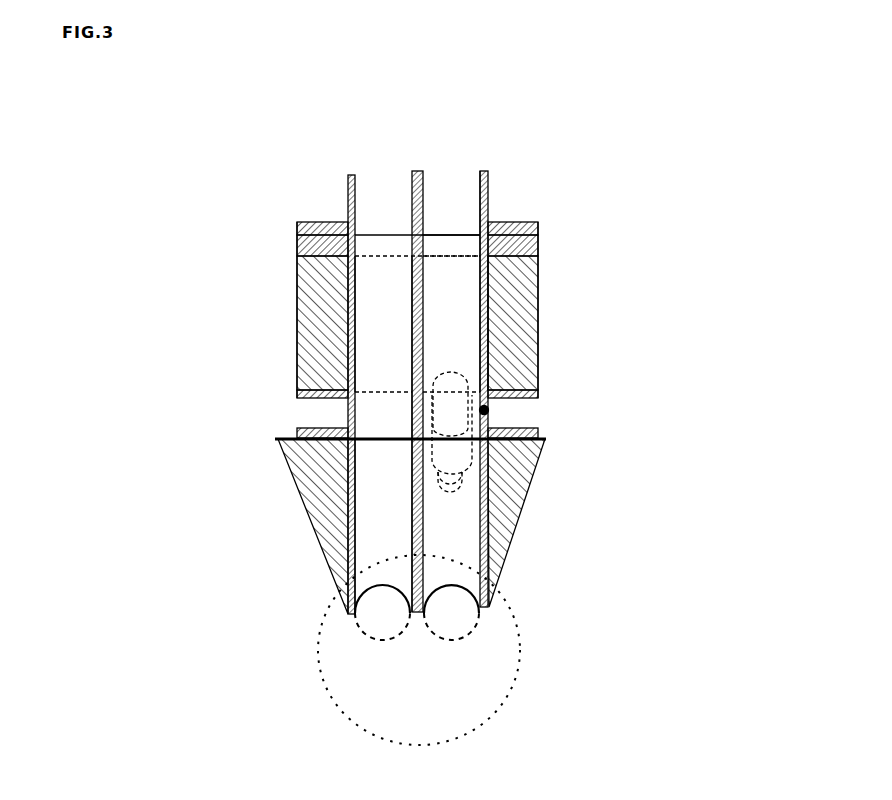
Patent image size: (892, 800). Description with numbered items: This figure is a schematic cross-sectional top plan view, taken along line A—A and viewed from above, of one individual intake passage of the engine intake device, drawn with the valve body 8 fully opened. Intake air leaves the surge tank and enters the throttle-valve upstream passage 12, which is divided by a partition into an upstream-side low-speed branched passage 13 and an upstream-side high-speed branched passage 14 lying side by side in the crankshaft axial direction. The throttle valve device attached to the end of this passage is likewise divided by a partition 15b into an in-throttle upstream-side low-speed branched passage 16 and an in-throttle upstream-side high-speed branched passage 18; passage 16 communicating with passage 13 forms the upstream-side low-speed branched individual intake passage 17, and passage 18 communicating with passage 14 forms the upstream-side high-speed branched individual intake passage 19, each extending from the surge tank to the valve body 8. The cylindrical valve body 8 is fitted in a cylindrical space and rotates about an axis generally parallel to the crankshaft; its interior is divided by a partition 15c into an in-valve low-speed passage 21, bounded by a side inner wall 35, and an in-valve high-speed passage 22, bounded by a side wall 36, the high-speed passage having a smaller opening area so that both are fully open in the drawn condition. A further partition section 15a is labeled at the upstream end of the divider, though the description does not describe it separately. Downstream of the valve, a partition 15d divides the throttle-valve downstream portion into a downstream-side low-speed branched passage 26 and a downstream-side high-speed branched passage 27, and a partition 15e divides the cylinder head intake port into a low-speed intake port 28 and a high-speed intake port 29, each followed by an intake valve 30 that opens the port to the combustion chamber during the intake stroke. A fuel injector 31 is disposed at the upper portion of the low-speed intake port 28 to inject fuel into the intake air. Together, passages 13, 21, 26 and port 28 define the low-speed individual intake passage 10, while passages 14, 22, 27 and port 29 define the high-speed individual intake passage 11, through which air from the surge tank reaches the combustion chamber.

The valve body 8 is at (552, 357).
The low-speed individual intake passage 10 is at (460, 496).
The high-speed individual intake passage 11 is at (381, 480).
The throttle-valve upstream passage 12 is at (490, 210).
The upstream-side low-speed branched passage 13 is at (460, 197).
The upstream-side high-speed branched passage 14 is at (341, 202).
The partition plate upper portion 15a is at (408, 190).
The partition 15b is at (343, 222).
The partition 15c is at (410, 305).
The partition 15d is at (410, 412).
The partition 15e is at (410, 454).
The in-throttle upstream-side low-speed branched passage 16 is at (457, 251).
The upstream-side low-speed branched individual intake passage 17 is at (458, 175).
The in-throttle upstream-side high-speed branched passage 18 is at (378, 247).
The upstream-side high-speed branched individual intake passage 19 is at (378, 173).
The in-valve low-speed passage 21 is at (460, 338).
The in-valve high-speed passage 22 is at (381, 347).
The downstream-side low-speed branched passage 26 is at (490, 411).
The downstream-side high-speed branched passage 27 is at (381, 418).
The low-speed intake port 28 is at (453, 540).
The high-speed intake port 29 is at (381, 525).
The intake valve 30 is at (360, 632).
The fuel injector 31 is at (505, 452).
The side inner wall 35 is at (492, 304).
The side wall 36 is at (299, 322).